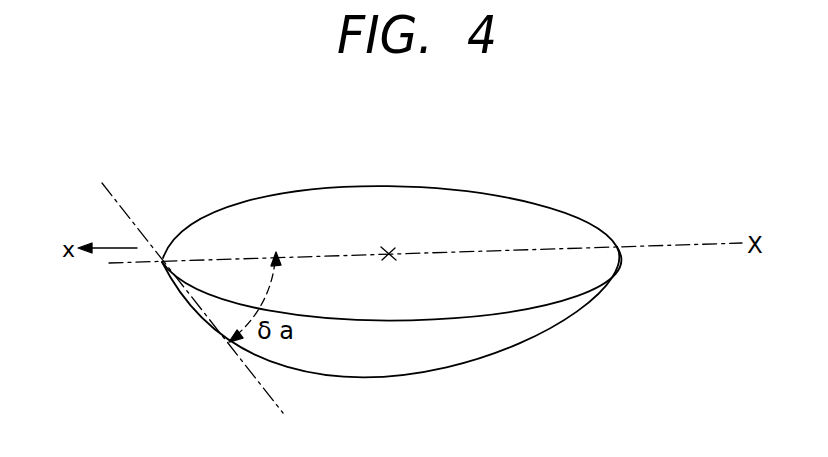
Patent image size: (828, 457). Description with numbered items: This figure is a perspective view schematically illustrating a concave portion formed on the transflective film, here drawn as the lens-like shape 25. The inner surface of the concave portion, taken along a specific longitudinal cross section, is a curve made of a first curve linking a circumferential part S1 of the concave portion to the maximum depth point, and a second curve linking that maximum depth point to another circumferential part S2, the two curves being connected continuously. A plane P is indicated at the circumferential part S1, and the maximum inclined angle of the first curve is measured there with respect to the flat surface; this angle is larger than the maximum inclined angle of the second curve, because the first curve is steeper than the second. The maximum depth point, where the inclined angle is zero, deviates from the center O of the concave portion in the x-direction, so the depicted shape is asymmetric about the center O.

The lens 25 is at (296, 199).
The plane P is at (103, 177).
The circumferential part S1 is at (162, 262).
The another circumferential part S2 is at (617, 247).
The center of the concave portion O is at (389, 253).